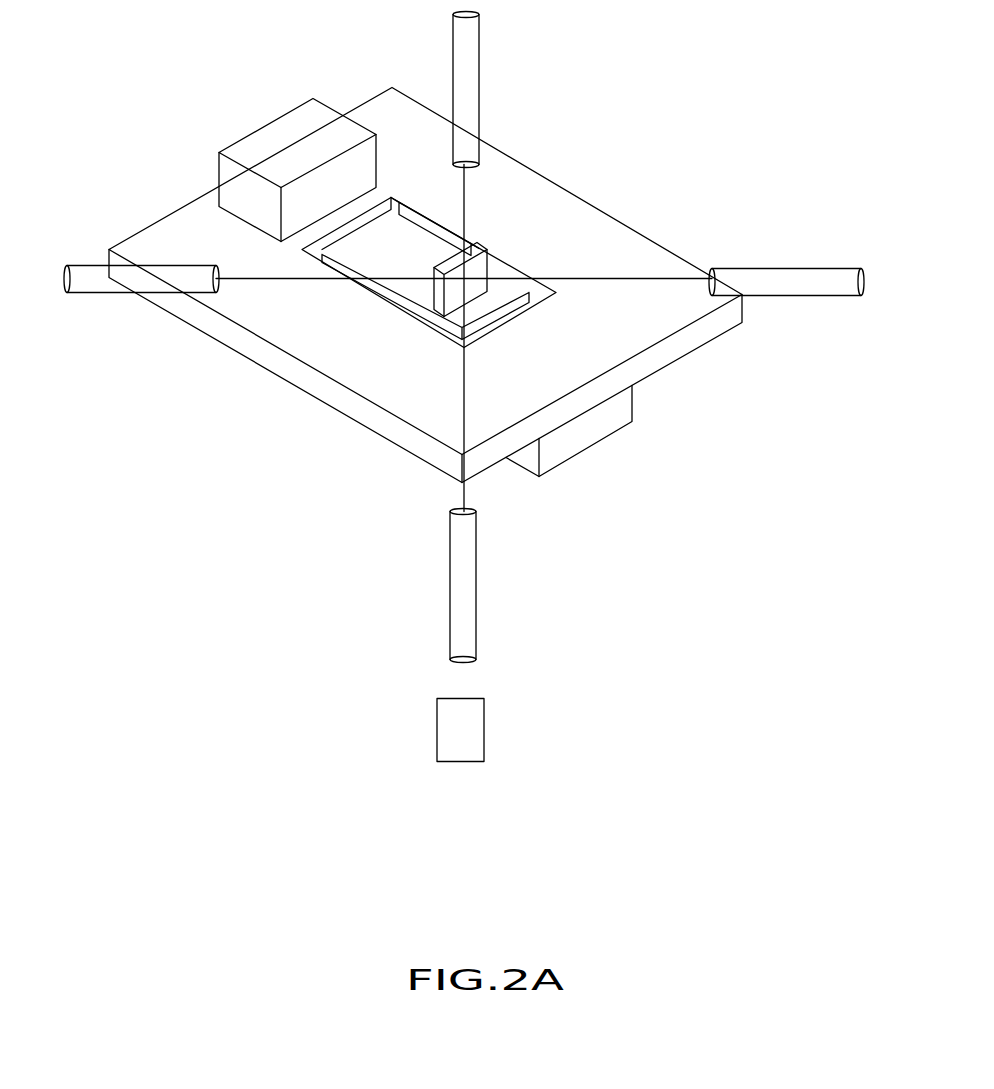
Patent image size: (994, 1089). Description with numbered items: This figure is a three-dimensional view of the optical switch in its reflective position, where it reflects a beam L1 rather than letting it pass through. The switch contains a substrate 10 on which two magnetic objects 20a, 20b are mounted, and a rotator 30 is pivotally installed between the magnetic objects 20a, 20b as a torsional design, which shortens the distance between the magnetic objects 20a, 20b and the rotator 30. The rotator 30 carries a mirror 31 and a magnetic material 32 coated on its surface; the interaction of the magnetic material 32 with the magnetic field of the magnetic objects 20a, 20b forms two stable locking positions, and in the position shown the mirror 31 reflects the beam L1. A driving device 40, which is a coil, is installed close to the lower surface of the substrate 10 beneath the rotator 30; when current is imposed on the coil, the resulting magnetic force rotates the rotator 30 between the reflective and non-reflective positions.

The substrate 10 is at (550, 193).
The magnetic object 20a is at (242, 148).
The magnetic object 20b is at (582, 438).
The rotator 30 is at (440, 235).
The mirror 31 is at (490, 248).
The magnetic material 32 is at (396, 217).
The driving device 40 is at (446, 735).
The beam L1 is at (463, 418).